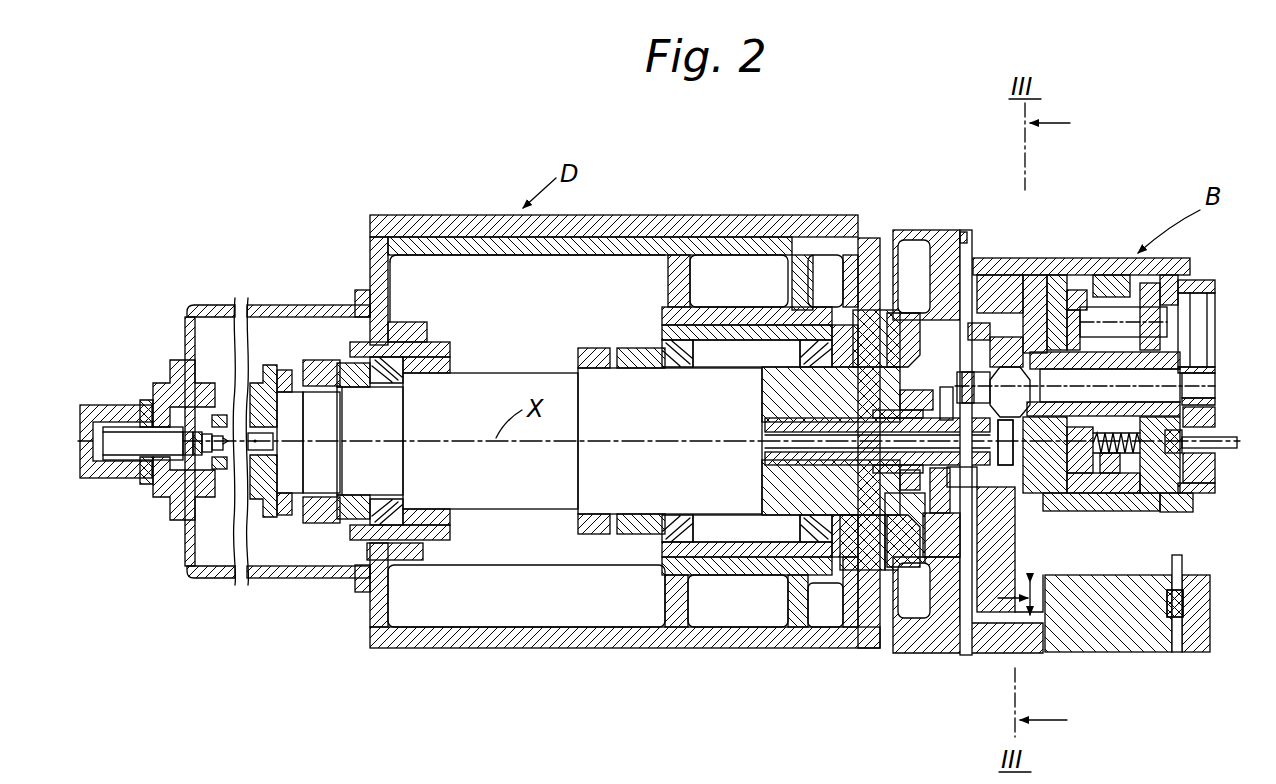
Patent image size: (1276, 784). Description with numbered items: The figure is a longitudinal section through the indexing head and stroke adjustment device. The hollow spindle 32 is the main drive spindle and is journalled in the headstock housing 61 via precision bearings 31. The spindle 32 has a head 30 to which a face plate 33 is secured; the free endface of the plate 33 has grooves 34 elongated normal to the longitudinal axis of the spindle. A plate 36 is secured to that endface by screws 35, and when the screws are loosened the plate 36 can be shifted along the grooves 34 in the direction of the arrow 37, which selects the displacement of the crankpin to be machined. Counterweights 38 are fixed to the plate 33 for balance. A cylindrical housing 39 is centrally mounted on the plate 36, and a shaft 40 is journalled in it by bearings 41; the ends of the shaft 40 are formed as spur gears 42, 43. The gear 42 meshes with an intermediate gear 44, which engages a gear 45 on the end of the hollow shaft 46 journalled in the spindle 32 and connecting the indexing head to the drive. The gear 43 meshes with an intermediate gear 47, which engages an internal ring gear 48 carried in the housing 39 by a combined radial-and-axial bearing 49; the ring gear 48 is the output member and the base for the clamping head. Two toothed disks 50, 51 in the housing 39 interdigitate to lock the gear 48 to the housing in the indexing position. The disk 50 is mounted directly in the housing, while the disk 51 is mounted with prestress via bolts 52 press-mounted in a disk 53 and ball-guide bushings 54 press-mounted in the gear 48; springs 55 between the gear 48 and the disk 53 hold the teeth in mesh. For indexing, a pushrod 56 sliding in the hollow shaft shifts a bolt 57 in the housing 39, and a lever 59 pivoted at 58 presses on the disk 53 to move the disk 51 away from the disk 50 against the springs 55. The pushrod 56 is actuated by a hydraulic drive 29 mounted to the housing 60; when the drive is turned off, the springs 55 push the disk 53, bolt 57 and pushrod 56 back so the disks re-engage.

The hydraulic drive 29 is at (100, 405).
The head 30 is at (847, 364).
The precision bearings 31 is at (382, 387).
The hollow spindle 32 is at (482, 386).
The face plate 33 is at (938, 243).
The grooves 34 is at (965, 236).
The screws 35 is at (930, 296).
The plate 36 is at (998, 275).
The arrow 37 is at (1063, 618).
The counterweights 38 is at (1190, 635).
The cylindrical housing 39 is at (1033, 283).
The shaft 40 is at (1106, 396).
The bearings 41 is at (1013, 369).
The spur gear 42 is at (970, 381).
The spur gear 43 is at (1197, 373).
The intermediate gear 44 is at (965, 410).
The gear 45 is at (973, 462).
The hollow shaft 46 is at (763, 421).
The intermediate gear 47 is at (1196, 415).
The internal ring gear 48 is at (1200, 495).
The combined radial-and-axial bearing 49 is at (1170, 512).
The disk 50 is at (1047, 500).
The disk 51 is at (1075, 502).
The bolts 52 is at (1157, 318).
The disk 53 is at (1066, 293).
The ball-guide bushings 54 is at (1160, 335).
The springs 55 is at (1128, 490).
The pushrod 56 is at (255, 442).
The bolt 57 is at (1012, 445).
The pivot 58 is at (1094, 293).
The lever 59 is at (1088, 490).
The housing 60 is at (212, 305).
The headstock housing 61 is at (588, 243).